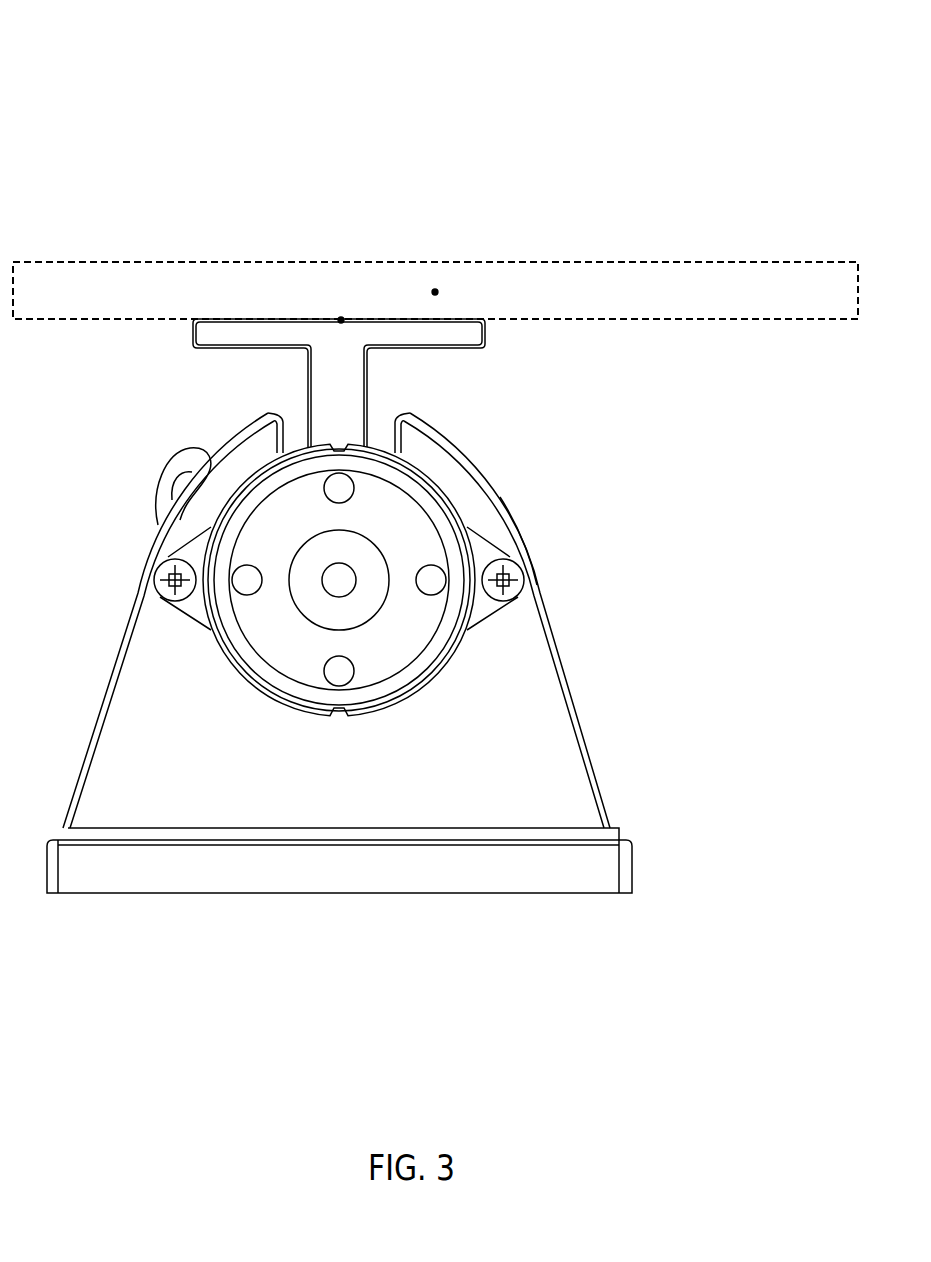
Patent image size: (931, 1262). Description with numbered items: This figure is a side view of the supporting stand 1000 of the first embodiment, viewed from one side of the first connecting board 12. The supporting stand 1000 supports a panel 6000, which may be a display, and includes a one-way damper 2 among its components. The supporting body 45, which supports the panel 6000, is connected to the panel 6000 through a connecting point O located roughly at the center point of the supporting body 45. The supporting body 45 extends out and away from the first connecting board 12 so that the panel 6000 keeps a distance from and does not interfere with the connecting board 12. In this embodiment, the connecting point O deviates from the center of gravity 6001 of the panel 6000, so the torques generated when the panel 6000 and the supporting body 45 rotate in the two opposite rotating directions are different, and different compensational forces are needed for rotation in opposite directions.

The supporting stand 1000 is at (173, 42).
The panel 6000 is at (157, 262).
The connecting point O is at (341, 320).
The center of gravity 6001 is at (435, 292).
The supporting body 45 is at (485, 333).
The one-way damper 2 is at (407, 520).
The first connecting board 12 is at (530, 713).